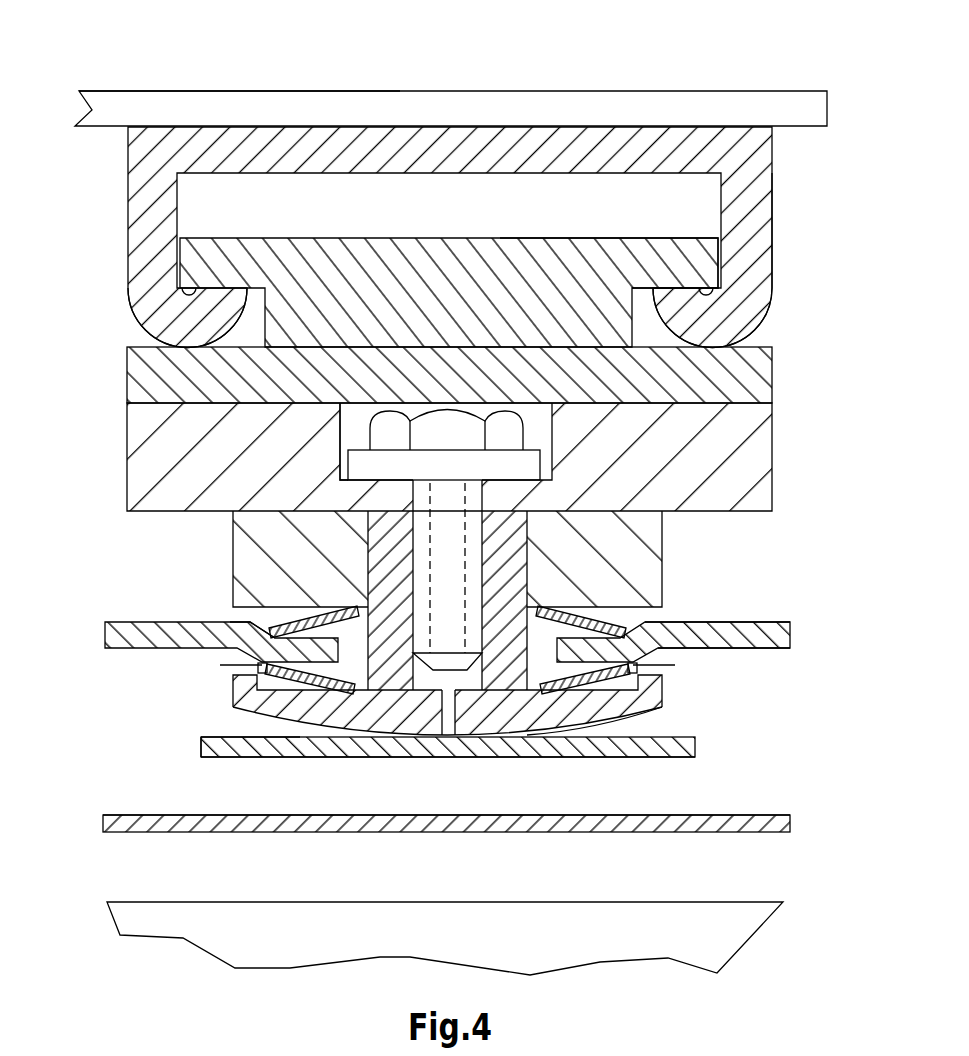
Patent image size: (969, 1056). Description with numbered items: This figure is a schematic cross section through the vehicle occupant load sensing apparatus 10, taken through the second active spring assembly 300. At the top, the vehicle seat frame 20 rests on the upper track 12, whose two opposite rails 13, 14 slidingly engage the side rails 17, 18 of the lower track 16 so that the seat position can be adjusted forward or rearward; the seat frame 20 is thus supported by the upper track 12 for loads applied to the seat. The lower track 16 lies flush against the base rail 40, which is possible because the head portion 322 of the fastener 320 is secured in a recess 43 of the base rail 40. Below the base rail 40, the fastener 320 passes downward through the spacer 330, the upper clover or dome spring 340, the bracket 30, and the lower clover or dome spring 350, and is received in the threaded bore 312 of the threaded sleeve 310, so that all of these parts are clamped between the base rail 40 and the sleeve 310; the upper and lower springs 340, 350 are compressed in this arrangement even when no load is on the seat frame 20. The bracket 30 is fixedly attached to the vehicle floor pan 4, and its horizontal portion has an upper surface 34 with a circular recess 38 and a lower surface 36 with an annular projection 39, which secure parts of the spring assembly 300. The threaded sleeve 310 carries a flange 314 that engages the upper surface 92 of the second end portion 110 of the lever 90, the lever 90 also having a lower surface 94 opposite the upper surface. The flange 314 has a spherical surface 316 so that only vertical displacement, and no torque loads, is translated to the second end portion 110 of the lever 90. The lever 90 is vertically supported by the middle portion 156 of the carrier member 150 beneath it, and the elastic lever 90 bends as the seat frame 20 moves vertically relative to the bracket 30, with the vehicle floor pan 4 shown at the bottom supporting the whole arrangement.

The vehicle occupant load sensing apparatus 10 is at (100, 72).
The vehicle seat frame 20 is at (792, 90).
The upper track 12 is at (778, 180).
The rail 13 is at (160, 302).
The rail 14 is at (752, 267).
The lower track 16 is at (774, 375).
The side rail 17 is at (207, 262).
The side rail 18 is at (693, 262).
The recess 43 is at (353, 422).
The head portion 322 is at (444, 425).
The fastener 320 is at (526, 431).
The base rail 40 is at (774, 480).
The threaded sleeve 310 is at (366, 544).
The spacer 330 is at (664, 545).
The upper clover spring 340 is at (304, 612).
The lower clover spring 350 is at (569, 694).
The bracket 30 is at (737, 616).
The upper surface 34 is at (770, 620).
The lower surface 36 is at (752, 648).
The second active spring assembly 300 is at (100, 634).
The circular recess 38 is at (262, 623).
The annular projection 39 is at (257, 666).
The spherical surface 316 is at (615, 716).
The flange 314 is at (603, 712).
The threaded bore 312 is at (468, 684).
The upper surface 92 is at (202, 733).
The lower surface 94 is at (313, 757).
The second end portion 110 is at (220, 745).
The lever 90 is at (233, 760).
The carrier member 150 is at (795, 825).
The middle portion 156 is at (345, 815).
The vehicle floor pan 4 is at (675, 899).